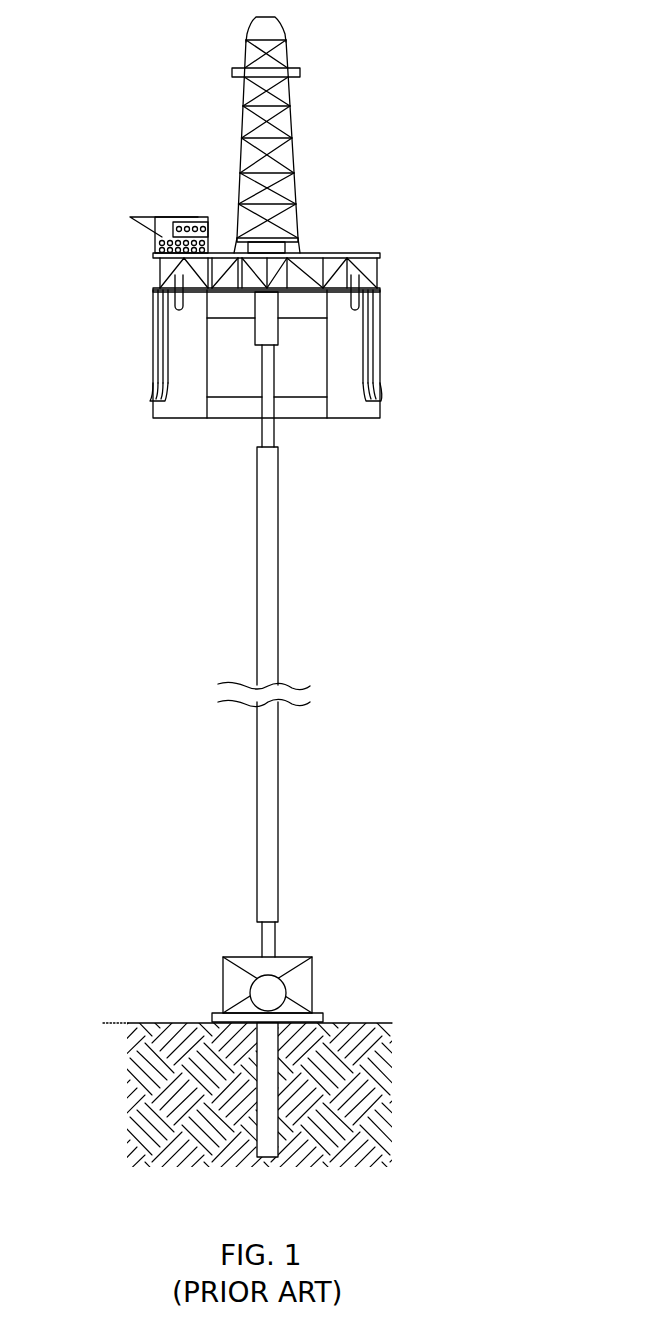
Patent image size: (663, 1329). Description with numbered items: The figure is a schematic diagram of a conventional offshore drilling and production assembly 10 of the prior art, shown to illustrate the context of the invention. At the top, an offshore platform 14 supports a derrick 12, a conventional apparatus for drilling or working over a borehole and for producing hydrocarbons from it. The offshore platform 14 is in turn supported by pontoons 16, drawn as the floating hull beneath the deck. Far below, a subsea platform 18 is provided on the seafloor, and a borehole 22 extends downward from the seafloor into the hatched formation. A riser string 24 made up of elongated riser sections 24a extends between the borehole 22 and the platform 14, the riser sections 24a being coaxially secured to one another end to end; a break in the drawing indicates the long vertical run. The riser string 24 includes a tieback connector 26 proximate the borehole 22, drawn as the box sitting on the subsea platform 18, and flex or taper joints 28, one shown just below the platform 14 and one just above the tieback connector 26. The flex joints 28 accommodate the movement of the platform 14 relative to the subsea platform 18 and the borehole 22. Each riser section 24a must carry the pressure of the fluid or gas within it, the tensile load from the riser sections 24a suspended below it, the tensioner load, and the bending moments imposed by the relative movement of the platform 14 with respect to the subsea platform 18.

The offshore drilling and production assembly 10 is at (428, 110).
The derrick 12 is at (295, 118).
The offshore platform 14 is at (380, 267).
The pontoons 16 is at (163, 413).
The subsea platform 18 is at (323, 1018).
The borehole 22 is at (280, 1174).
The riser string 24 is at (312, 684).
The riser sections 24a is at (257, 537).
The tieback connector 26 is at (312, 982).
The flex or taper joints 28 is at (312, 310).